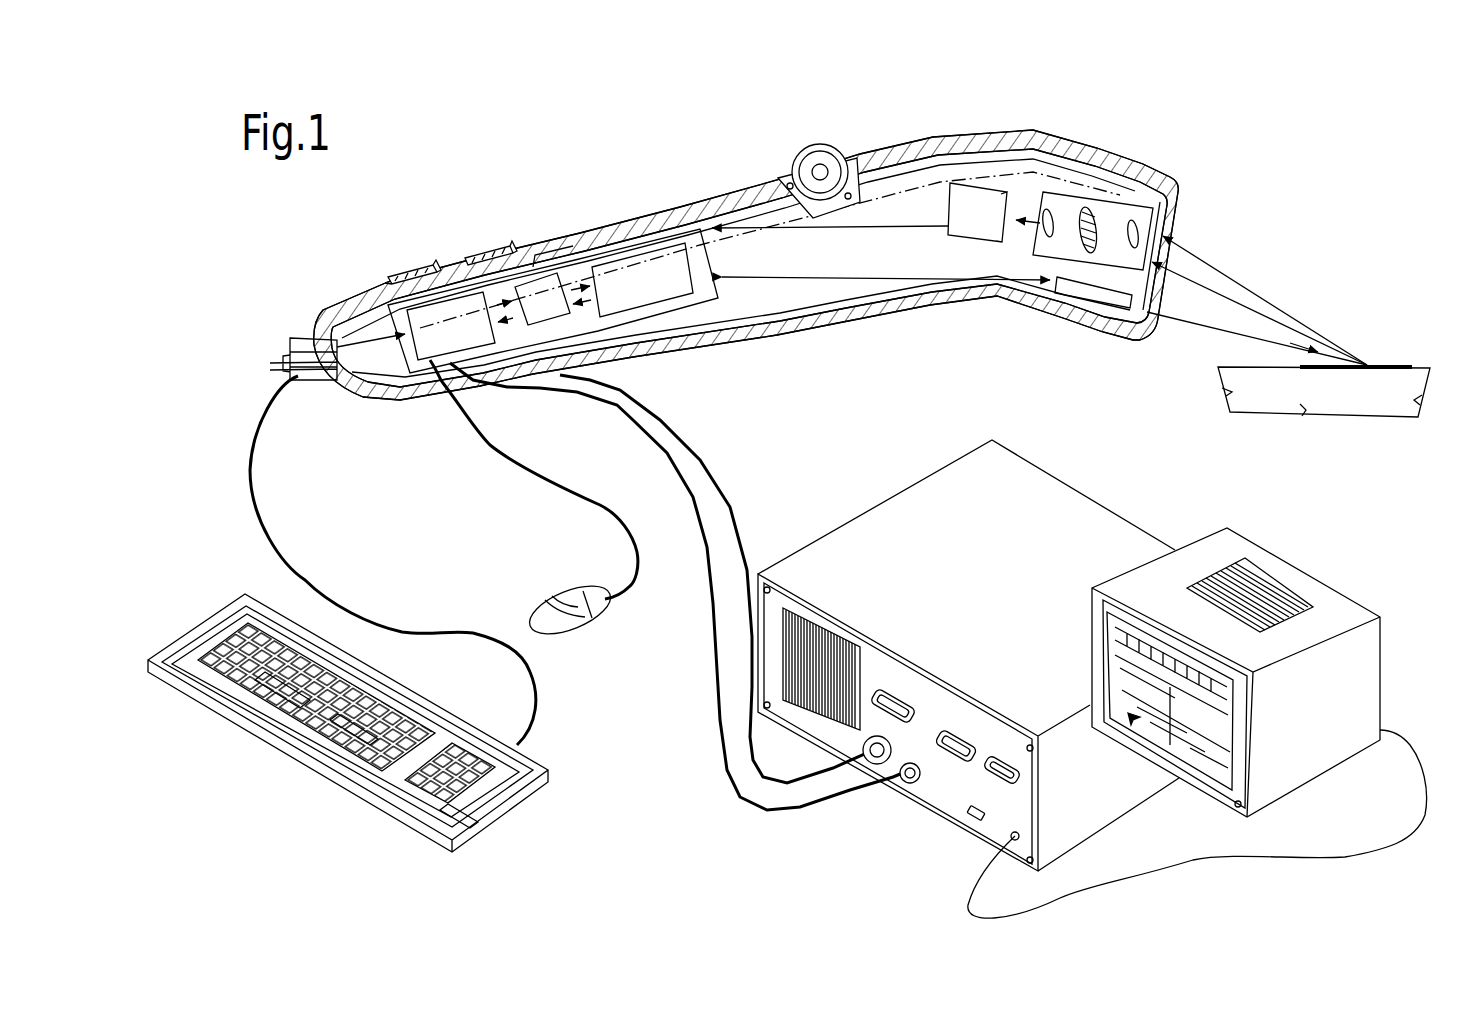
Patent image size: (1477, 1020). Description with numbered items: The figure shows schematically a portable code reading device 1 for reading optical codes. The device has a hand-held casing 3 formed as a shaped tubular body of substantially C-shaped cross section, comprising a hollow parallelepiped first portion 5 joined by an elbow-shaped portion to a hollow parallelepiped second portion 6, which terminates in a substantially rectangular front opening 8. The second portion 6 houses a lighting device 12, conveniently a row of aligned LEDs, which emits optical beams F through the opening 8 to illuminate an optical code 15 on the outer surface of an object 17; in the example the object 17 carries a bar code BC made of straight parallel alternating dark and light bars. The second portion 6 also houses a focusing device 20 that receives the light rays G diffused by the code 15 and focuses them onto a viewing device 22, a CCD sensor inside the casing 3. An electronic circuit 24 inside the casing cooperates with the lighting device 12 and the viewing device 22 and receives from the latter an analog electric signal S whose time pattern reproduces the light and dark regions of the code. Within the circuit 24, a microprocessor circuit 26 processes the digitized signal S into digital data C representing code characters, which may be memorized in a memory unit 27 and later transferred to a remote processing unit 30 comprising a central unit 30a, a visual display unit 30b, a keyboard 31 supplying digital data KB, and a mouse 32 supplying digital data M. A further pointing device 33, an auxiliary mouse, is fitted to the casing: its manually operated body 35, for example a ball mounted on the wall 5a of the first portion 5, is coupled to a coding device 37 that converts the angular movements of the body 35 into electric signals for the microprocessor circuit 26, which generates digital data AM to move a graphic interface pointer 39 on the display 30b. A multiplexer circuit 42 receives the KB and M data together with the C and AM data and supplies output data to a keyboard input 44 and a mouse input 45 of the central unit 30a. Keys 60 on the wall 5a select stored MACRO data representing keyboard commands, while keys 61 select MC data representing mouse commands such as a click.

The portable code reading device 1 is at (1268, 190).
The hand-held casing 3 is at (605, 212).
The first portion 5 is at (530, 256).
The wall 5a is at (642, 223).
The second portion 6 is at (1105, 158).
The front opening 8 is at (1173, 208).
The lighting device 12 is at (1083, 287).
The optical code 15 is at (1403, 362).
The object 17 is at (1410, 380).
The focusing device 20 is at (1133, 217).
The viewing device 22 is at (972, 207).
The electronic circuit 24 is at (582, 270).
The microprocessor circuit 26 is at (548, 284).
The memory unit 27 is at (634, 294).
The remote processing unit 30 is at (1092, 666).
The central unit 30a is at (901, 515).
The visual display unit 30b is at (1196, 555).
The keyboard 31 is at (302, 753).
The pointing device (mouse) 32 is at (590, 622).
The further pointing device (auxiliary mouse) 33 is at (827, 131).
The manually operated body 35 is at (800, 157).
The coding device 37 is at (808, 213).
The graphic interface pointer 39 is at (1128, 716).
The multiplexer circuit 42 is at (428, 343).
The keyboard input 44 is at (872, 762).
The mouse input 45 is at (920, 783).
The first number of keys 60 is at (403, 279).
The second number of keys 61 is at (480, 256).
The digital data AM is at (533, 348).
The bar code BC is at (1373, 362).
The digital data C is at (582, 303).
The optical beams F is at (1185, 321).
The light rays G is at (1233, 284).
The digital data KB is at (258, 531).
The digital data M is at (455, 488).
The analog electric signal S is at (875, 227).